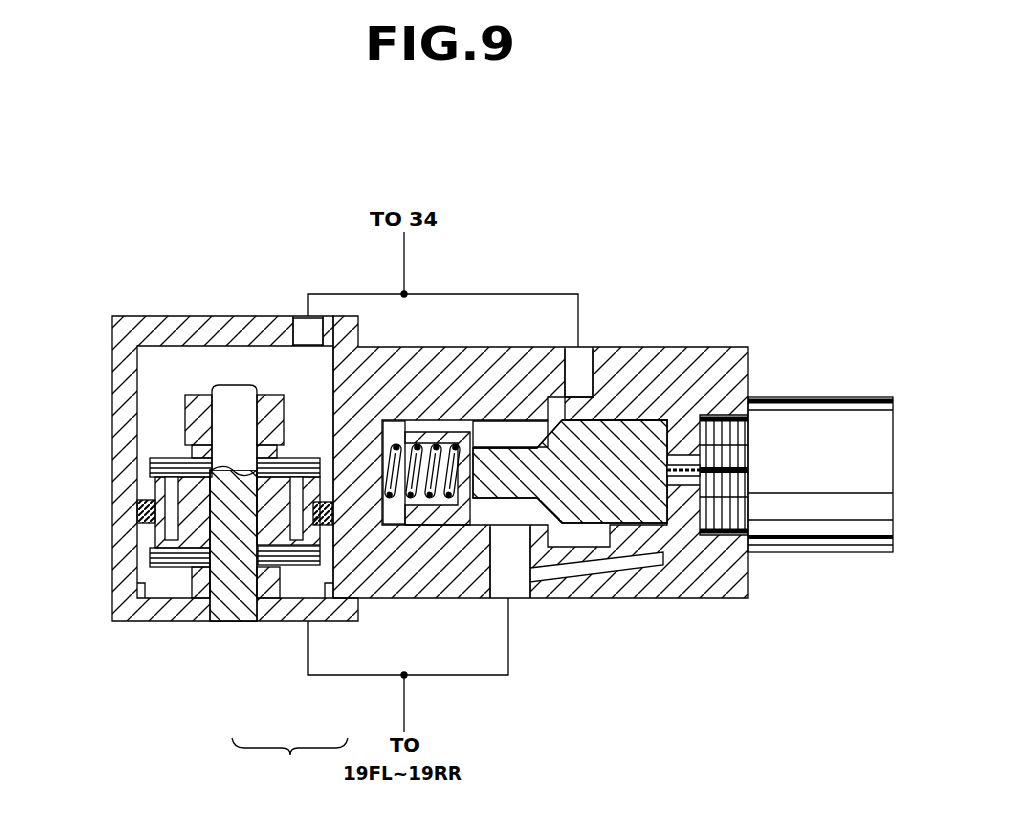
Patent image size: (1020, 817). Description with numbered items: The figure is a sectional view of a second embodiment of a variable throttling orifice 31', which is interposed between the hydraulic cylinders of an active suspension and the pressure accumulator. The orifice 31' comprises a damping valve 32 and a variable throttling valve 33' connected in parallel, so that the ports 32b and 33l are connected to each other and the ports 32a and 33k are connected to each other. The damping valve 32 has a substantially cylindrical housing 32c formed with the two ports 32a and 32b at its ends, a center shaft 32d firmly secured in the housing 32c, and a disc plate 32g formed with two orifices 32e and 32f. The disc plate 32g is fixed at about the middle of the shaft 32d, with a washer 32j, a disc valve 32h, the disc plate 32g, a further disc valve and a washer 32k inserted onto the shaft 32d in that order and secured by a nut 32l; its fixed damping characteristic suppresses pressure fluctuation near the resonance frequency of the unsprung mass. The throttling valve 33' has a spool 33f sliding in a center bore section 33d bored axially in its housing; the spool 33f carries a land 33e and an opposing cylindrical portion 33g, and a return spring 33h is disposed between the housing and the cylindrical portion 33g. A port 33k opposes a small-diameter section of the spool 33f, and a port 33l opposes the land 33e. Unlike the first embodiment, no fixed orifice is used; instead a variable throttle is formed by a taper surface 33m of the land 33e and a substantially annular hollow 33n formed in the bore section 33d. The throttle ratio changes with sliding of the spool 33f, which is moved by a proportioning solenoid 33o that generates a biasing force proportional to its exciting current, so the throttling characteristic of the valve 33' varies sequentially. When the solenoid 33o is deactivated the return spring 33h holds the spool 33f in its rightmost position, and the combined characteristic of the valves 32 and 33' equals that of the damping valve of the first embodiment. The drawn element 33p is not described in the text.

The variable throttling orifice 31' is at (290, 759).
The damping valve 32 is at (186, 542).
The port 32a is at (296, 621).
The port 32b is at (302, 327).
The housing 32c is at (110, 364).
The center shaft 32d is at (236, 397).
The orifice 32e is at (294, 466).
The orifice 32f is at (167, 493).
The disc plate 32g is at (143, 536).
The disc valve 32h is at (138, 562).
The washer 32j is at (192, 600).
The washer 32k is at (152, 462).
The nut 32l is at (192, 416).
The variable throttling valve 33' is at (530, 524).
The center bore section 33d is at (395, 428).
The land 33e is at (700, 412).
The spool 33f is at (497, 426).
The cylindrical portion 33g is at (440, 430).
The return spring 33h is at (452, 530).
The port 33k is at (518, 598).
The port 33l is at (582, 364).
The taper surface 33m is at (533, 420).
The annular hollow 33n is at (622, 418).
The proportioning solenoid 33o is at (812, 553).
The plunger 33p is at (683, 487).